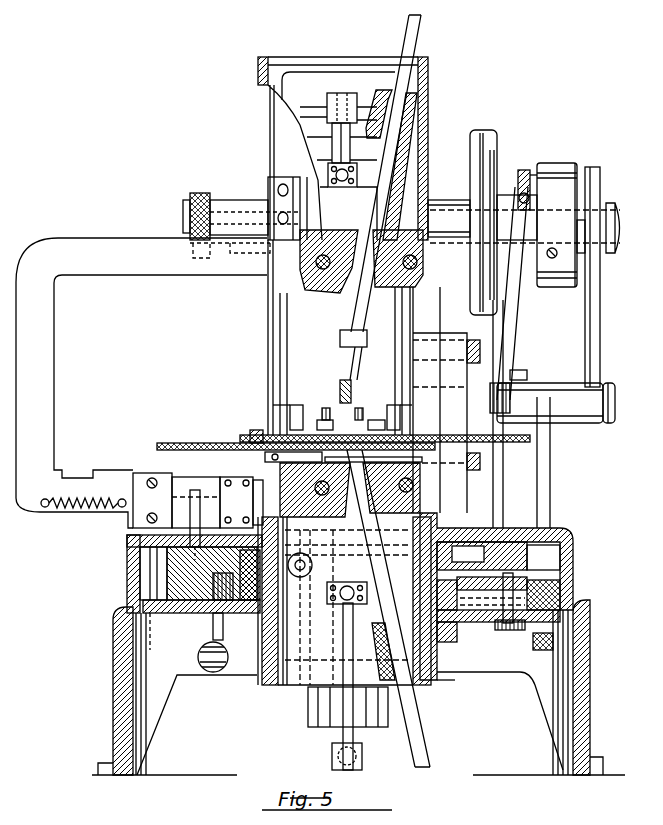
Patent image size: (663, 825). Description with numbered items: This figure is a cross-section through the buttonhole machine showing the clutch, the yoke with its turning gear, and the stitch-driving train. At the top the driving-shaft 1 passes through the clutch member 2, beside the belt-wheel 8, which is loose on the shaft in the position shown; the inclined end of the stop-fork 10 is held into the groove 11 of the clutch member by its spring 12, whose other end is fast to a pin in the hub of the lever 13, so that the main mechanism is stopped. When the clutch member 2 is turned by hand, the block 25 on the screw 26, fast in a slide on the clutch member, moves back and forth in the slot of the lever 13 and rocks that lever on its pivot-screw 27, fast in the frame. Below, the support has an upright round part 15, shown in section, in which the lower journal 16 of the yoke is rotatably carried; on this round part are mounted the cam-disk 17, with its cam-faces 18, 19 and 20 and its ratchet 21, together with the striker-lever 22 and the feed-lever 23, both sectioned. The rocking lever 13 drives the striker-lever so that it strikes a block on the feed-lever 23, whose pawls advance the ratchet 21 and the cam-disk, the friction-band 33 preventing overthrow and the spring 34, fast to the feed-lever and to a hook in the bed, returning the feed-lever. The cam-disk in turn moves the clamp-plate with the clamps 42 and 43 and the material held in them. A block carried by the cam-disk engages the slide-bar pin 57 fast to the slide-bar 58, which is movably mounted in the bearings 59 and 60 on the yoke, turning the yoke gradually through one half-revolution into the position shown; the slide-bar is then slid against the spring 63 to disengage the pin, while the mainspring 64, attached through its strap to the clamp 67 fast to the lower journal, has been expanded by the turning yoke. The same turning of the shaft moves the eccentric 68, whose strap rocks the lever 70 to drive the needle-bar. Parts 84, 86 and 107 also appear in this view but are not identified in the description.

The driving-shaft 1 is at (185, 222).
The clutch member 2 is at (557, 225).
The belt-wheel 8 is at (470, 296).
The stop-fork 10 is at (513, 300).
The groove 11 is at (522, 170).
The spring 12 is at (503, 490).
The lever 13 is at (600, 307).
The upright round part 15 is at (436, 672).
The lower journal 16 is at (270, 685).
The cam-disk 17 is at (510, 530).
The cam-face 18 is at (482, 556).
The cam-face 19 is at (194, 574).
The cam-face 20 is at (228, 628).
The ratchet 21 is at (168, 568).
The striker-lever 22 is at (508, 623).
The feed-lever 23 is at (447, 625).
The block 25 is at (587, 255).
The screw 26 is at (630, 213).
The pivot-screw 27 is at (615, 398).
The friction-band 33 is at (567, 532).
The spring 34 is at (152, 631).
The clamp 42 is at (383, 407).
The clamp 43 is at (303, 407).
The slide-bar pin 57 is at (182, 477).
The slide-bar 58 is at (210, 480).
The bearing 59 is at (152, 500).
The bearing 60 is at (241, 502).
The spring 63 is at (56, 512).
The mainspring 64 is at (198, 657).
The clamp 67 is at (262, 684).
The eccentric 68 is at (452, 668).
The lever 70 is at (343, 148).
The arm 84 is at (78, 476).
The rod 86 is at (370, 209).
The pin 107 is at (532, 172).